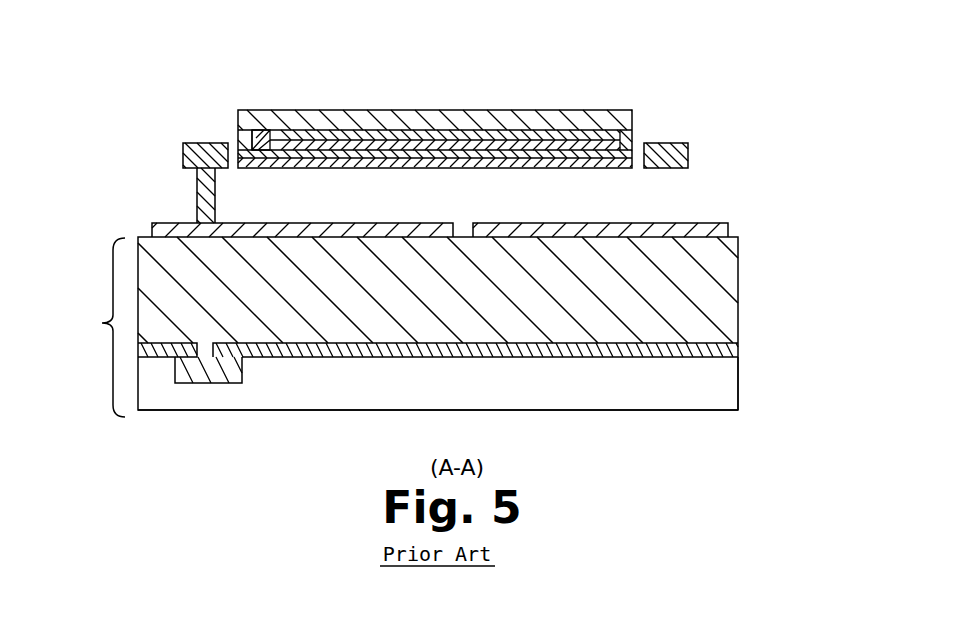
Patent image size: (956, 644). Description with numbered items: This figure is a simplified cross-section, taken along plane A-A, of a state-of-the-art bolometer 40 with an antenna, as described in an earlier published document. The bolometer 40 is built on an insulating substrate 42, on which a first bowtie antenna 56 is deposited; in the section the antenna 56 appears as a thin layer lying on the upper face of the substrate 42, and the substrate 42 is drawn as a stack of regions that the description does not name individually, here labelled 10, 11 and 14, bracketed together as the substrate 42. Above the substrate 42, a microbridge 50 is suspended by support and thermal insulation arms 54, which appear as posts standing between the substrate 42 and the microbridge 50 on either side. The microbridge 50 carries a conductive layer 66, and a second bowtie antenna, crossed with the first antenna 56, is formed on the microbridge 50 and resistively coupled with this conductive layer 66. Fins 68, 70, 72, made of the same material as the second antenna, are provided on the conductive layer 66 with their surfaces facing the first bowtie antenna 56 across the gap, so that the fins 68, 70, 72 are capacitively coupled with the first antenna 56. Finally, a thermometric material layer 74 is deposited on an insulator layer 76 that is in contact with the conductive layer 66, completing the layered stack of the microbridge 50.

The substrate 10 is at (722, 278).
The buried layer 11 is at (735, 350).
The lower substrate portion 14 is at (712, 384).
The bolometer 40 is at (496, 68).
The insulating substrate 42 is at (97, 327).
The microbridge 50 is at (619, 104).
The support and thermal insulation arms 54 is at (184, 191).
The first bowtie antenna 56 is at (351, 225).
The conductive layer 66 is at (490, 136).
The fin 68 is at (341, 135).
The fin 70 is at (424, 136).
The fin 72 is at (552, 138).
The thermometric material layer 74 is at (292, 118).
The insulator layer 76 is at (264, 120).